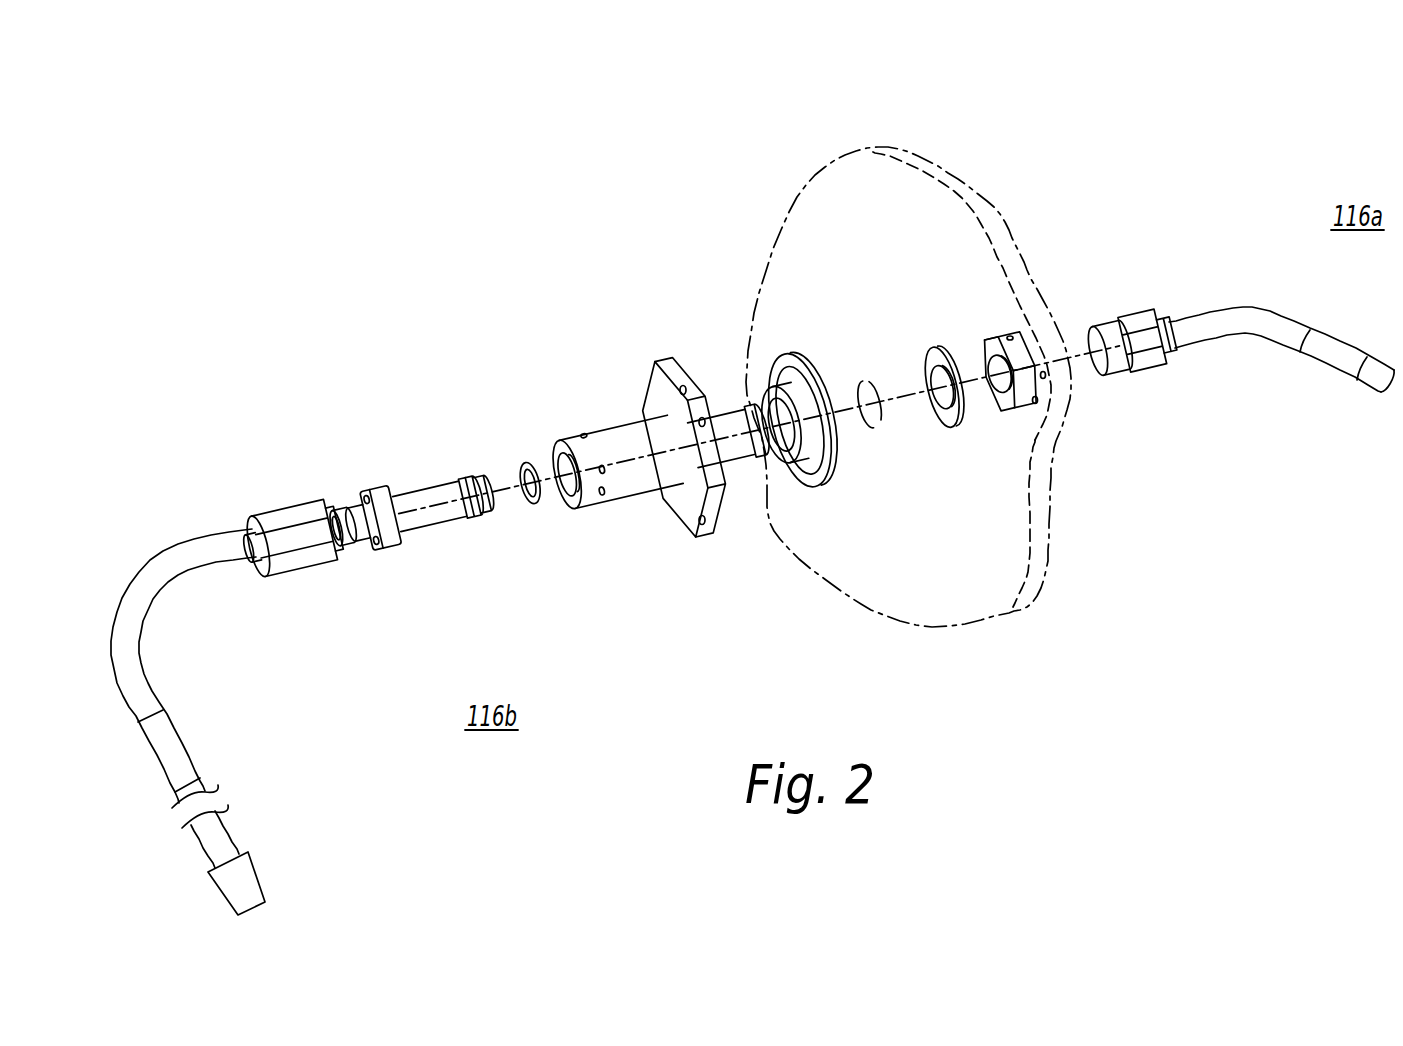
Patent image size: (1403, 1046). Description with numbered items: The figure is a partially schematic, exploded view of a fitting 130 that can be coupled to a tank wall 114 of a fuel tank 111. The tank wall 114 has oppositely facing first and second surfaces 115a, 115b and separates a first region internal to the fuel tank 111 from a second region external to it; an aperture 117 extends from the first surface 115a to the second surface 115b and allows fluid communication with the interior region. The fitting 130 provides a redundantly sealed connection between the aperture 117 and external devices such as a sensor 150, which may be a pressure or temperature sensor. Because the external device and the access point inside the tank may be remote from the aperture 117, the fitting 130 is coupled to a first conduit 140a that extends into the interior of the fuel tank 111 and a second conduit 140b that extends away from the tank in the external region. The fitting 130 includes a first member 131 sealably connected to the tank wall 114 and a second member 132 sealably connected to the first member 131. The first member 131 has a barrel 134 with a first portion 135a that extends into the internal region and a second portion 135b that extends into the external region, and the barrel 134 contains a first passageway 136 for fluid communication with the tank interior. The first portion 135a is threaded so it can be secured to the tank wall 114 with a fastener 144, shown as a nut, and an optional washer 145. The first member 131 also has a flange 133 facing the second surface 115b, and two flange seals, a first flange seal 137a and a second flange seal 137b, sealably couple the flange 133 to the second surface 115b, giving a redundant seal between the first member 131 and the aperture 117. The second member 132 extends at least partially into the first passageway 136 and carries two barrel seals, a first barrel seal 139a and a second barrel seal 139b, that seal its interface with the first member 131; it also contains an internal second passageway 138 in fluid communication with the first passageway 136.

The fuel tank 111 is at (1193, 165).
The fitting 130 is at (360, 308).
The first conduit 140a is at (1223, 303).
The second conduit 140b is at (208, 543).
The sensor 150 is at (262, 887).
The second passageway 138 is at (332, 548).
The second member 132 is at (363, 500).
The second barrel seal 139b is at (462, 487).
The first barrel seal 139a is at (528, 462).
The first member 131 is at (600, 423).
The first passageway 136 is at (545, 448).
The flange 133 is at (643, 380).
The barrel 134 is at (723, 517).
The first portion 135a is at (738, 535).
The second portion 135b is at (630, 513).
The first flange seal 137a is at (752, 418).
The second flange seal 137b is at (798, 360).
The tank wall 114 is at (915, 628).
The first surface 115a is at (1060, 440).
The second surface 115b is at (1005, 603).
The aperture 117 is at (1000, 487).
The washer 145 is at (920, 368).
The fastener 144 is at (998, 330).